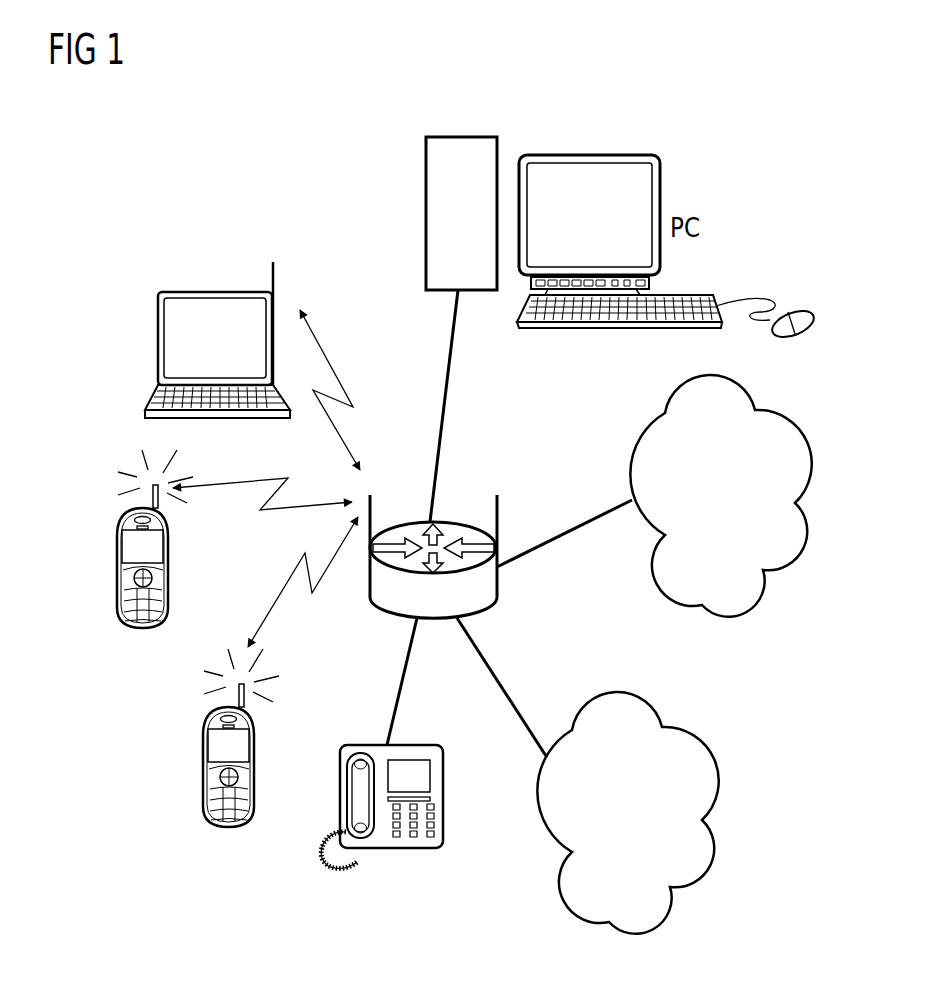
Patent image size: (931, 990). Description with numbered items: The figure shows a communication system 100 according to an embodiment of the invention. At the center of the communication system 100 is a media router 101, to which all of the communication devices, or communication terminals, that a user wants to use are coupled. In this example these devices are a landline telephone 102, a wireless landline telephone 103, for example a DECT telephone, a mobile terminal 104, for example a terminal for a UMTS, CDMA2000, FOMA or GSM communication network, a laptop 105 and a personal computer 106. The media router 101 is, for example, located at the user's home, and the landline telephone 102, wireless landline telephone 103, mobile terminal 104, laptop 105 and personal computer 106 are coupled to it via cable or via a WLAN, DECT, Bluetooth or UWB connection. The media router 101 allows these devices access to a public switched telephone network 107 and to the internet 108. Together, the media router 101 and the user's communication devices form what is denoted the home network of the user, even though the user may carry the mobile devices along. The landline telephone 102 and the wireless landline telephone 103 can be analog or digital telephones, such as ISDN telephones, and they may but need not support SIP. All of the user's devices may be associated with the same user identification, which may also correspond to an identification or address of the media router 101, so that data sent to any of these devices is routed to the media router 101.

The communication system 100 is at (742, 106).
The media router 101 is at (395, 612).
The landline telephone 102 is at (389, 849).
The wireless landline telephone 103 is at (203, 752).
The mobile terminal 104 is at (117, 545).
The laptop 105 is at (214, 292).
The personal computer 106 is at (460, 137).
The public switched telephone network 107 is at (806, 517).
The internet 108 is at (713, 832).